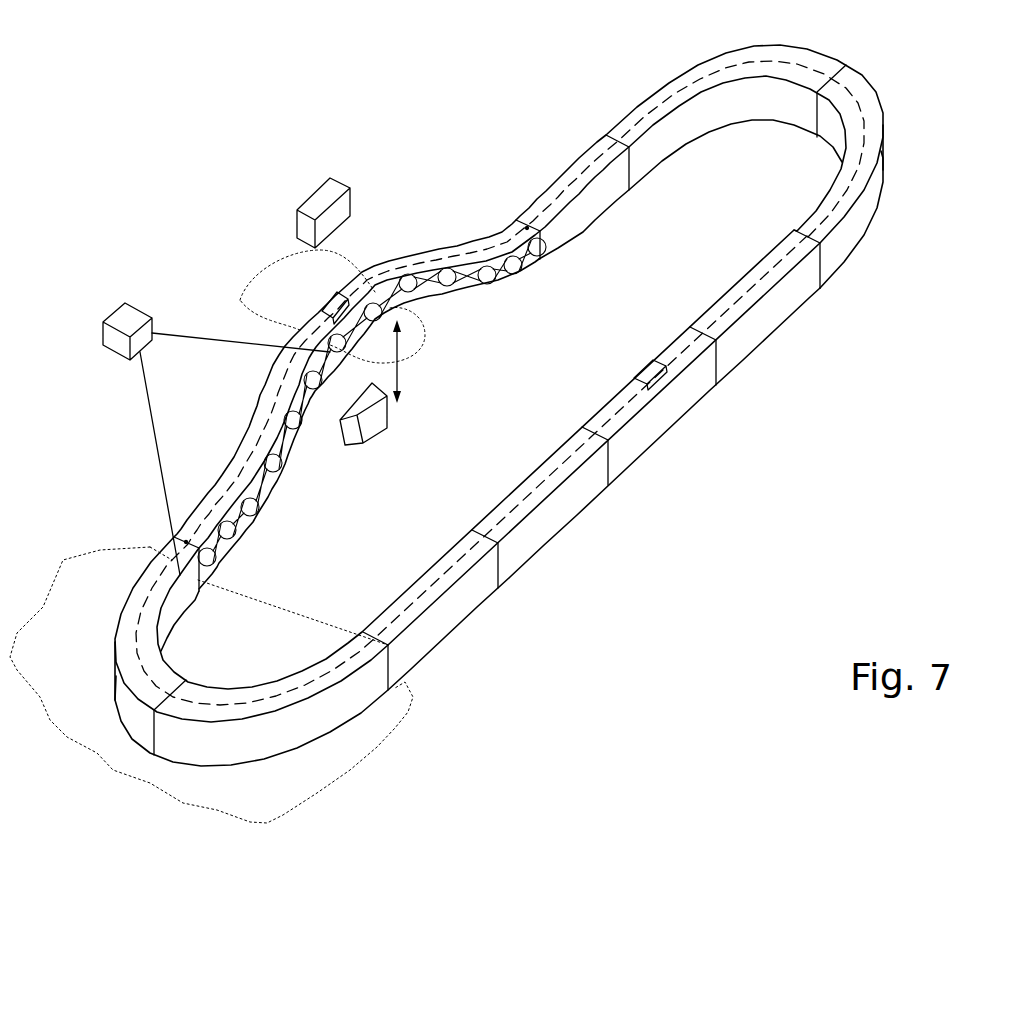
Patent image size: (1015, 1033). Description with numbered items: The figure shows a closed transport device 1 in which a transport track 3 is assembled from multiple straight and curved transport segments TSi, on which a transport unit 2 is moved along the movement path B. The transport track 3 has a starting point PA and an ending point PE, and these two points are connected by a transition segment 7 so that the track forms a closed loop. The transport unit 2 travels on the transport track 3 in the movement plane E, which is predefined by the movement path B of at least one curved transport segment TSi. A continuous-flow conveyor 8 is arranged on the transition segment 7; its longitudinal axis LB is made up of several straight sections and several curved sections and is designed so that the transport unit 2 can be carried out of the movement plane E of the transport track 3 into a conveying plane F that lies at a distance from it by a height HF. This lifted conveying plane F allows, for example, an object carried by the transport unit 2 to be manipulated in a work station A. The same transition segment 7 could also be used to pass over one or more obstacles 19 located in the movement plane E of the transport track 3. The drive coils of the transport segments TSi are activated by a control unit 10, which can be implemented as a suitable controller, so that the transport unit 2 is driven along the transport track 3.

The transport device 1 is at (150, 186).
The transport unit 2 is at (322, 304).
The transport track 3 is at (900, 331).
The transition segment 7 is at (440, 220).
The continuous-flow conveyor 8 is at (388, 260).
The control unit 10 is at (120, 357).
The obstacle 19 is at (363, 440).
The work station A is at (312, 198).
The conveying plane F is at (305, 290).
The movement path B is at (408, 585).
The movement plane E is at (363, 732).
The starting point PA is at (187, 540).
The ending point PE is at (527, 225).
The longitudinal axis LB is at (257, 437).
The height HF is at (409, 361).
The transport segments TSi is at (510, 583).